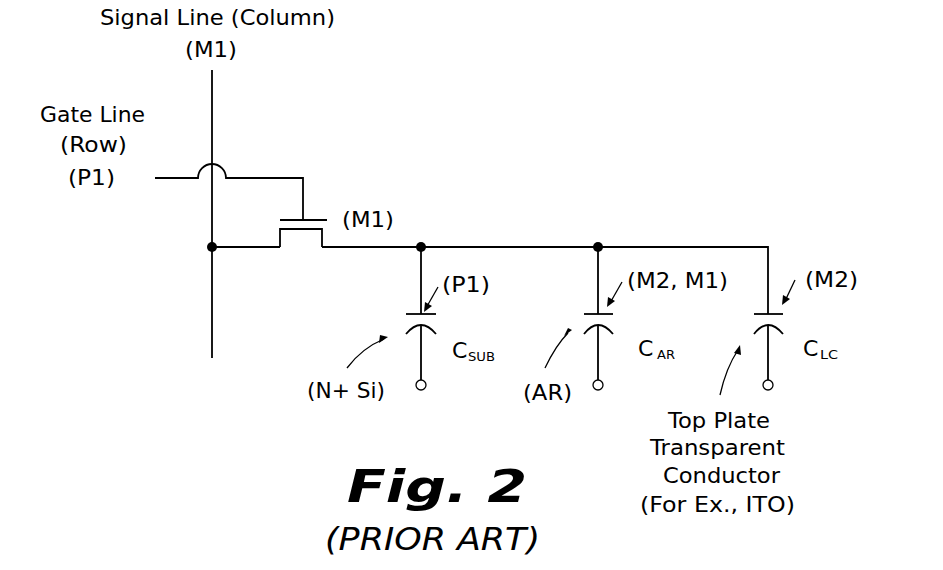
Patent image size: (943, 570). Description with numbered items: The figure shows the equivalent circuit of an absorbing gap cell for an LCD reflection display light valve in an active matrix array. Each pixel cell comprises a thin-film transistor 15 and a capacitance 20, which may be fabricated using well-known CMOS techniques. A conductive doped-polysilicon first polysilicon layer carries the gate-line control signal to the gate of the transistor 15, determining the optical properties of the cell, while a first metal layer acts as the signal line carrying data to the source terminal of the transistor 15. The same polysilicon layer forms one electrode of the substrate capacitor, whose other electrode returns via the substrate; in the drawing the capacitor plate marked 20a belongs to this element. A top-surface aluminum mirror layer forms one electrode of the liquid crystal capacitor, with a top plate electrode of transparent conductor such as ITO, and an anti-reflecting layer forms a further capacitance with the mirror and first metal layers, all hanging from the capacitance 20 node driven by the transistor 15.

The thin-film transistor 15 is at (328, 197).
The capacitance 20 is at (709, 247).
The storage capacitor plate (N+ Si) 20a is at (407, 315).